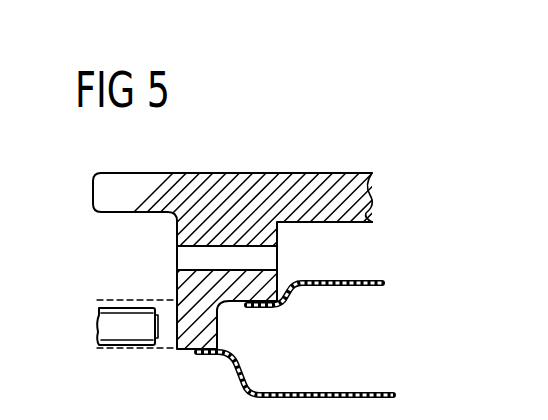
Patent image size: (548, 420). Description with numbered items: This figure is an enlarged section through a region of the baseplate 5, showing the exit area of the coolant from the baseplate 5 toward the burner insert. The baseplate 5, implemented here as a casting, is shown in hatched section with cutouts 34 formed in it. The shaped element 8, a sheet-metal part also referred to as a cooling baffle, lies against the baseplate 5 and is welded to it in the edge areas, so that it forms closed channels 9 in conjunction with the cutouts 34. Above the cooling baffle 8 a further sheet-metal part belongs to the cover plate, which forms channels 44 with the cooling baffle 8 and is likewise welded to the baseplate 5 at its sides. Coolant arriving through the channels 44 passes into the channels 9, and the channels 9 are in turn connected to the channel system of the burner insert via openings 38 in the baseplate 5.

The baseplate 5 is at (295, 187).
The cutouts 34 is at (346, 224).
The openings 38 is at (188, 258).
The shaped element 8 is at (358, 288).
The channels 9 is at (316, 270).
The channels 44 is at (257, 358).